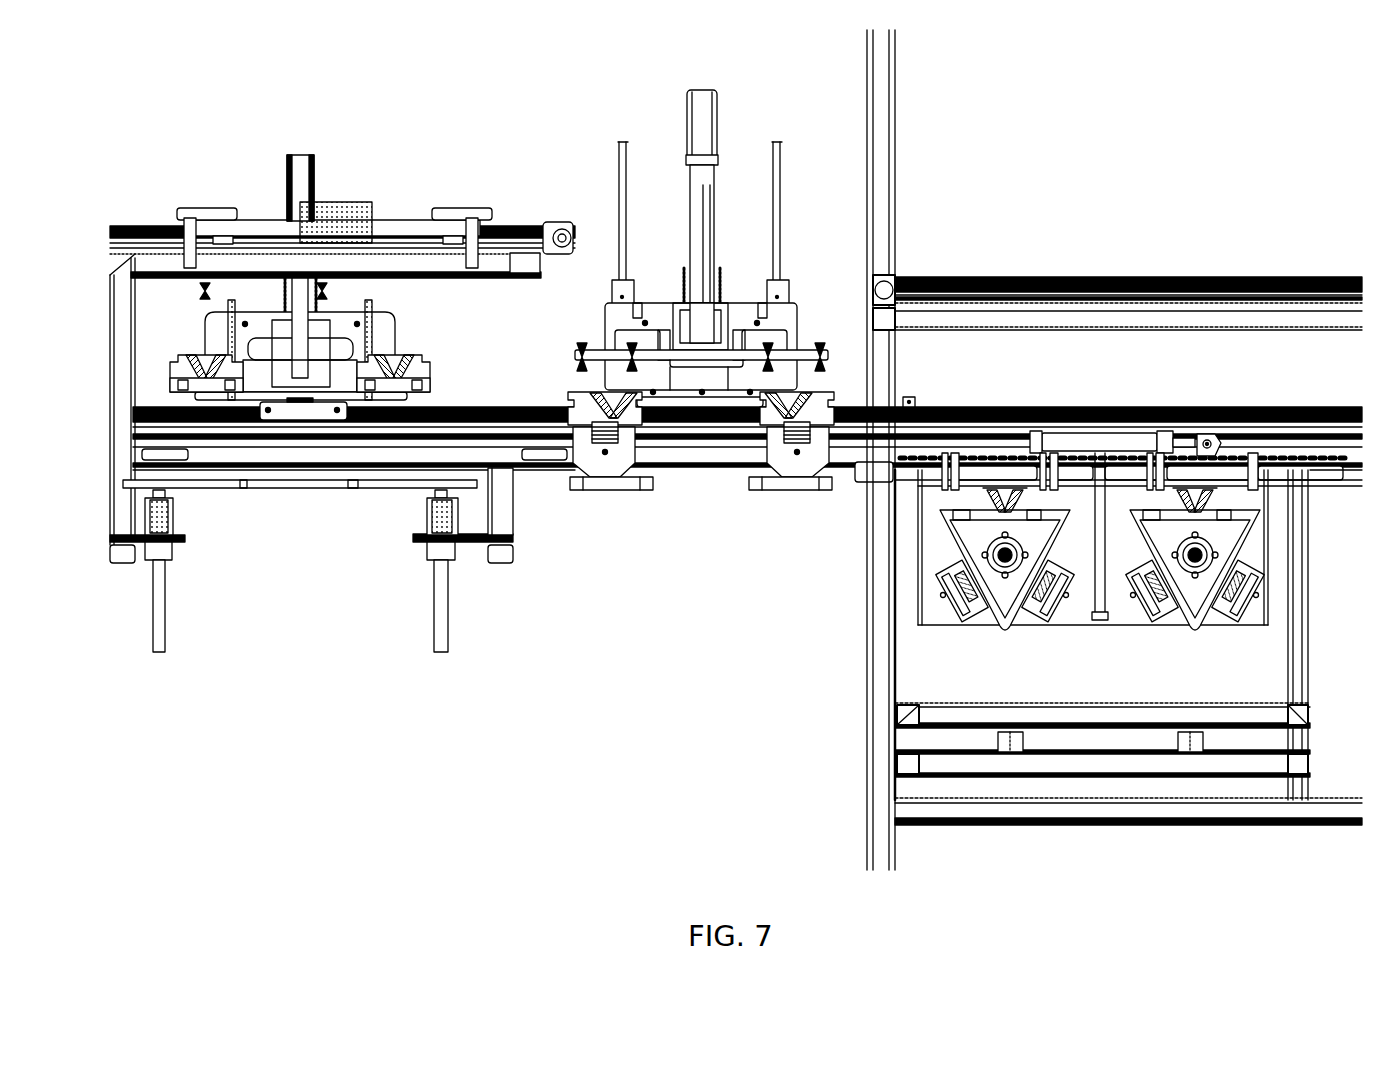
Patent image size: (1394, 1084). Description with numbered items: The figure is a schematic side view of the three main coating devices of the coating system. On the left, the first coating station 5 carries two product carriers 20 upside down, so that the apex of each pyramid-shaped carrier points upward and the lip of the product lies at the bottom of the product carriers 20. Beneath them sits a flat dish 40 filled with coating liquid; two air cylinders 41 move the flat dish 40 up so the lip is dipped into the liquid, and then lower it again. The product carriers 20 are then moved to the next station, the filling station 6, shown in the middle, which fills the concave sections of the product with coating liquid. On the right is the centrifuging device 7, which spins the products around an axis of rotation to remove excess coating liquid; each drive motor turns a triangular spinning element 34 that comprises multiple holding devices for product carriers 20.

The first coating station 5 is at (338, 353).
The filling station 6 is at (701, 336).
The centrifuging device 7 is at (1114, 450).
The product carrier 20 is at (715, 483).
The spinning element 34 is at (1100, 596).
The flat dish 40 is at (213, 488).
The air cylinder 41 is at (163, 548).